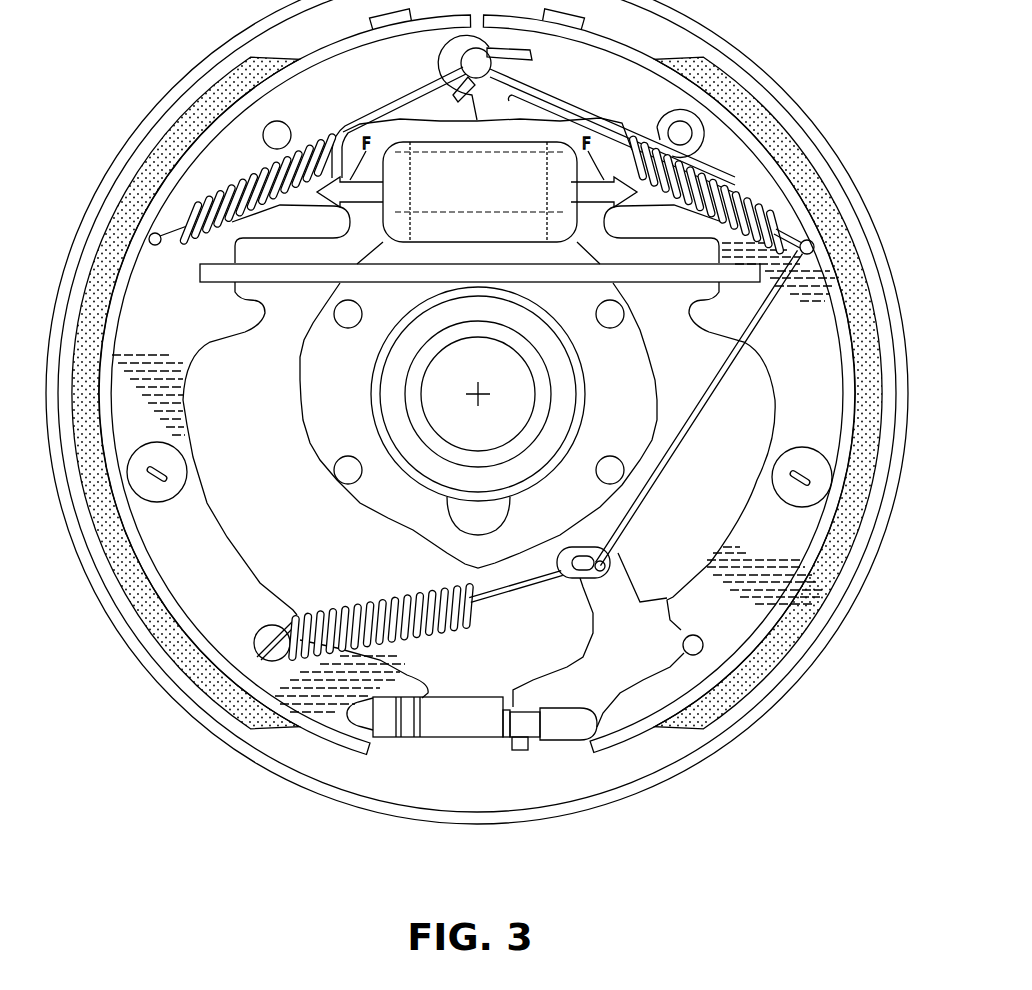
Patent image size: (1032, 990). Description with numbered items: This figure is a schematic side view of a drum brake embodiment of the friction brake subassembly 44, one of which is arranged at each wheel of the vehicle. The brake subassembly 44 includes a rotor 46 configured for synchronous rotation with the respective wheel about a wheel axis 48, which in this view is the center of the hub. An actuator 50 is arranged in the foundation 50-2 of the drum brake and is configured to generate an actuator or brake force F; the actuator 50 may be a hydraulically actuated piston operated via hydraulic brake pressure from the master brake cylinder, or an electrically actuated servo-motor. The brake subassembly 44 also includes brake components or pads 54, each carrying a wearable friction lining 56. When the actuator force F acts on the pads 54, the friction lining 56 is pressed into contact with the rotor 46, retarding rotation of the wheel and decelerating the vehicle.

The friction brake subassembly 44 is at (850, 160).
The rotor 46 is at (553, 820).
The wheel axis 48 is at (478, 394).
The actuator 50 is at (477, 192).
The foundation 50-2 is at (247, 502).
The brake component or pad 54 is at (76, 446).
The friction lining 56 is at (183, 128).